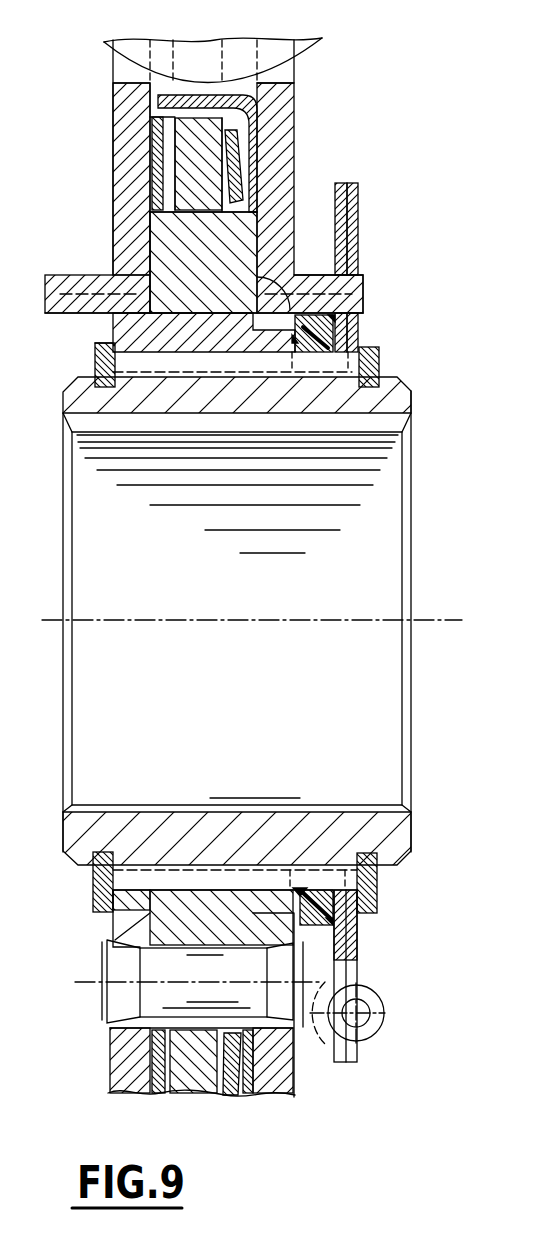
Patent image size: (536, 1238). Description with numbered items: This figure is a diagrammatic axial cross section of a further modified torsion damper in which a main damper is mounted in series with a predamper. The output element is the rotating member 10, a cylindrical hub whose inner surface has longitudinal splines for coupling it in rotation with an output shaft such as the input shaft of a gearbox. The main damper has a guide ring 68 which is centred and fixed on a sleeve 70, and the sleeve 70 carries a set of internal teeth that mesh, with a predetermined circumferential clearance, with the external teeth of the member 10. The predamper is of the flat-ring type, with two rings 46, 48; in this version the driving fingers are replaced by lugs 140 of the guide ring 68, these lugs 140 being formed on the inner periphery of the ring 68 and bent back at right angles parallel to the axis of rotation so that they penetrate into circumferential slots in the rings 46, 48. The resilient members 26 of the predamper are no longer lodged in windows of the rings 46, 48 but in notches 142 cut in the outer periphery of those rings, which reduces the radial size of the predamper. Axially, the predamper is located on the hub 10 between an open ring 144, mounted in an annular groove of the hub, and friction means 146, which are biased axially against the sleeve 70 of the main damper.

The guide ring 68 is at (296, 98).
The ring 46 is at (341, 183).
The ring 48 is at (352, 183).
The lug 140 is at (316, 280).
The friction means 146 is at (333, 328).
The open ring 144 is at (381, 352).
The rotating member 10 is at (412, 392).
The sleeve 70 is at (193, 330).
The resilient member 26 is at (373, 999).
The notch 142 is at (340, 1063).